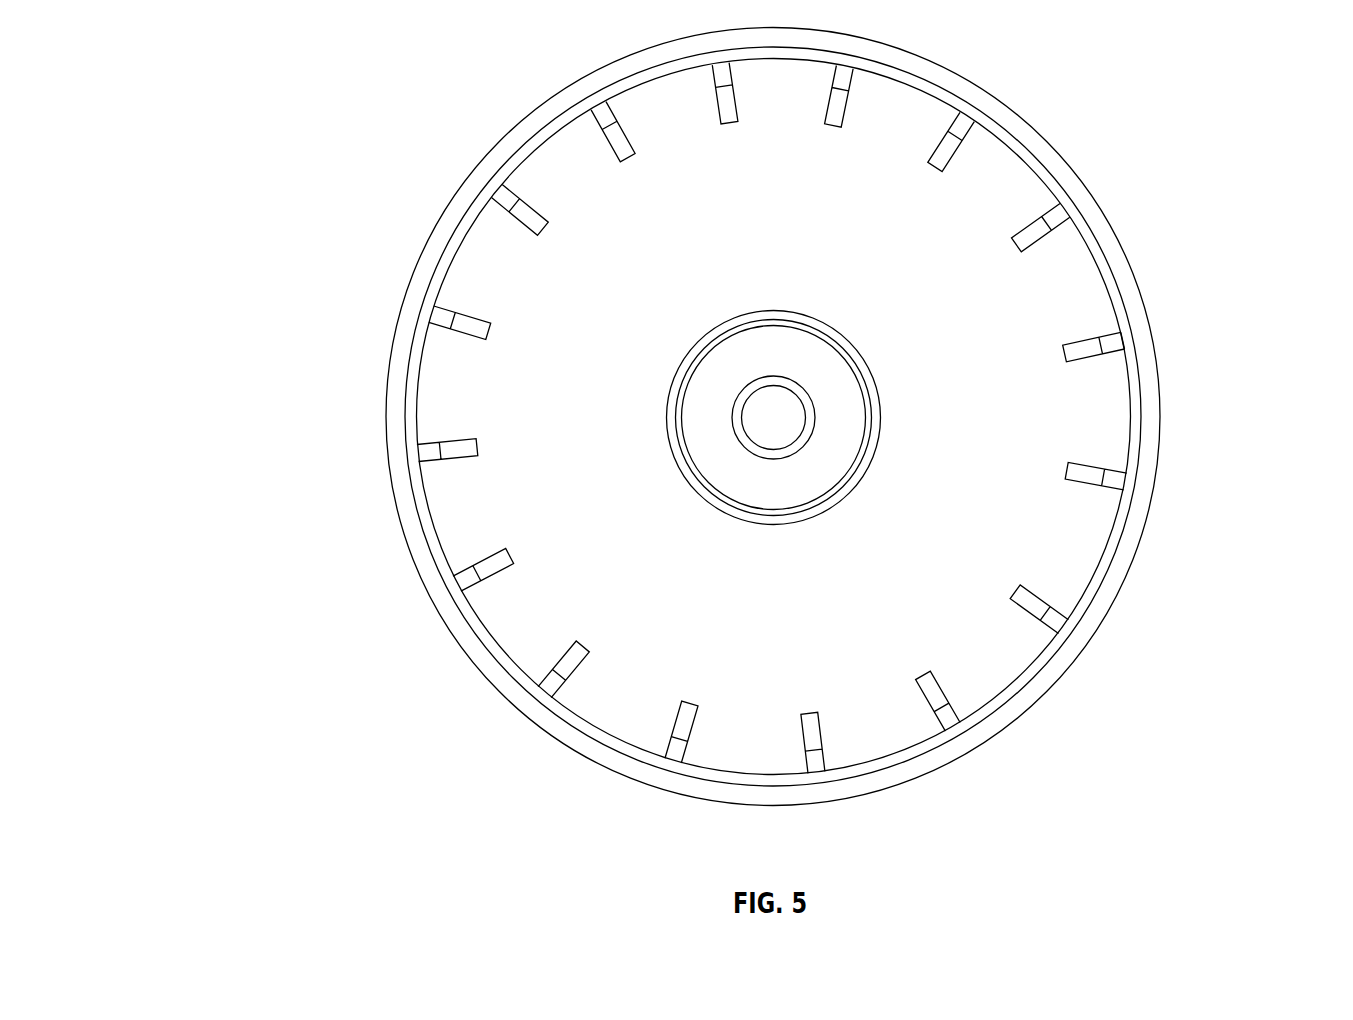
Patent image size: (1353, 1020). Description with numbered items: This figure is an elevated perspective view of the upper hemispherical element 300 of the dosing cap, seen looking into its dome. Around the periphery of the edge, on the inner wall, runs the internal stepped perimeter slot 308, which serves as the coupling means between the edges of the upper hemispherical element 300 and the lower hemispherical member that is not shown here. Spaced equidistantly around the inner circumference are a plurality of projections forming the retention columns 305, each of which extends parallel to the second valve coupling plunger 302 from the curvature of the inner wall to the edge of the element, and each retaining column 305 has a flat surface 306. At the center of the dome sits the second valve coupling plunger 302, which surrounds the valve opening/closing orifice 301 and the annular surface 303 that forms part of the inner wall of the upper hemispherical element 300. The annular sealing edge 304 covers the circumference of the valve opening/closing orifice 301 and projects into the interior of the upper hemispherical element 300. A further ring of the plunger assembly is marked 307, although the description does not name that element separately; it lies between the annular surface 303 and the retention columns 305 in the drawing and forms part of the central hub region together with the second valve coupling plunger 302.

The upper hemispherical element 300 is at (737, 423).
The valve opening/closing orifice 301 is at (787, 431).
The second valve coupling plunger 302 is at (883, 455).
The annular surface 303 is at (721, 477).
The annular sealing edge 304 is at (806, 392).
The retention column 305 is at (1103, 348).
The flat surface 306 is at (1122, 333).
The hub outer ring 307 is at (679, 420).
The internal stepped perimeter slot 308 is at (525, 153).